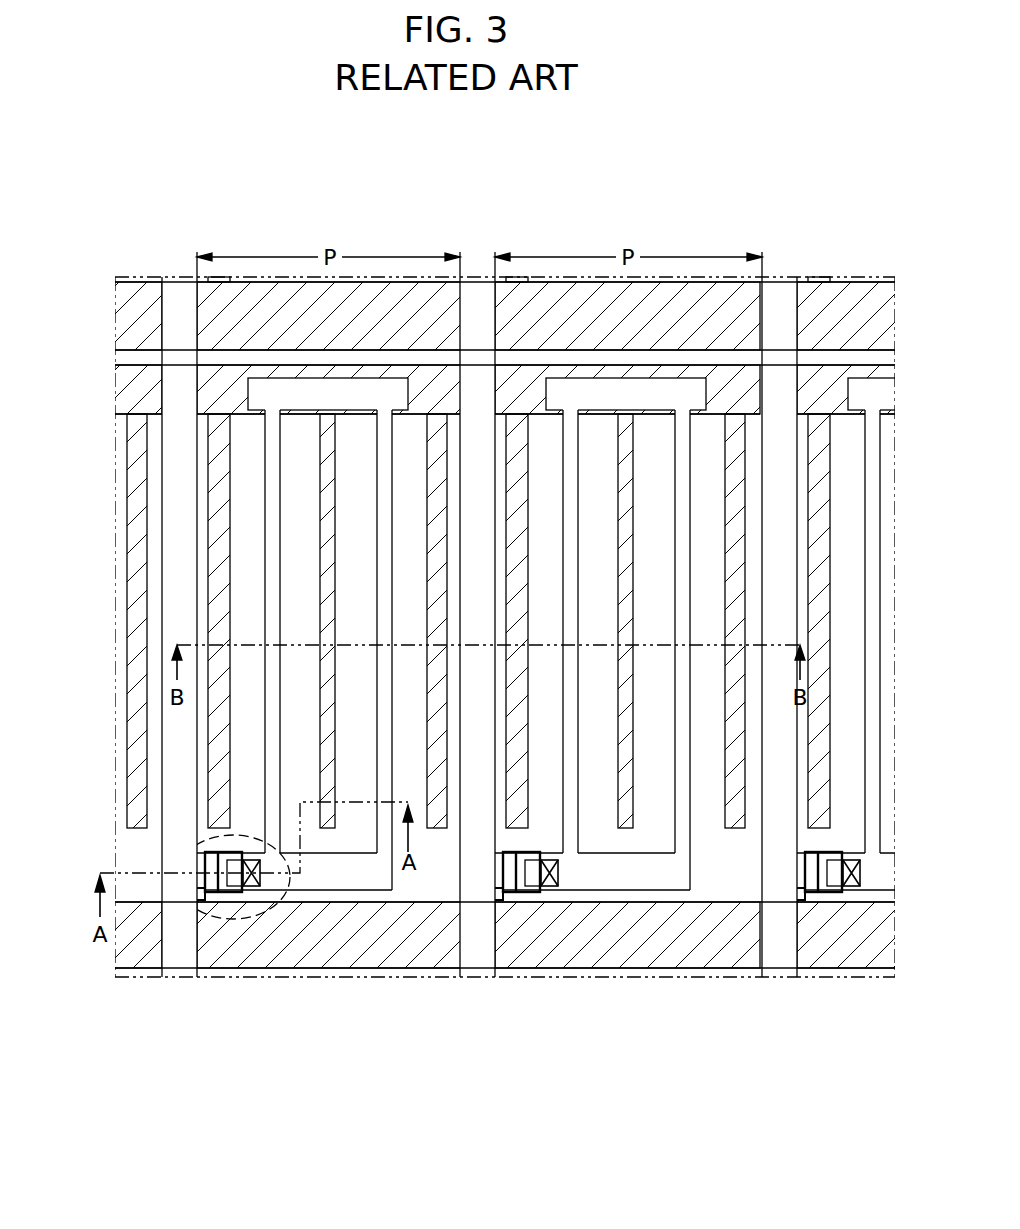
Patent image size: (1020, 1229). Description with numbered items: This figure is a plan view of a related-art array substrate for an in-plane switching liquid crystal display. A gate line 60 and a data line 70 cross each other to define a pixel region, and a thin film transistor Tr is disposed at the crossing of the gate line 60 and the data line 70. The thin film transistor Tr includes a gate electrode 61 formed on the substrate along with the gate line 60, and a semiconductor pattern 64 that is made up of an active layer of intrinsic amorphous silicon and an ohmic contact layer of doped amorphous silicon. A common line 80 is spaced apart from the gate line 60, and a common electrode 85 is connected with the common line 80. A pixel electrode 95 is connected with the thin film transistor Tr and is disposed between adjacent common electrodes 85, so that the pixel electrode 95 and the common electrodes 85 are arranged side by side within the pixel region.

The gate line 60 is at (510, 626).
The data line 70 is at (175, 498).
The common line 80 is at (510, 631).
The common electrode 85 is at (510, 669).
The pixel electrode 95 is at (510, 669).
The gate electrode 61 is at (510, 669).
The semiconductor pattern 64 is at (247, 893).
The thin film transistor Tr is at (510, 669).